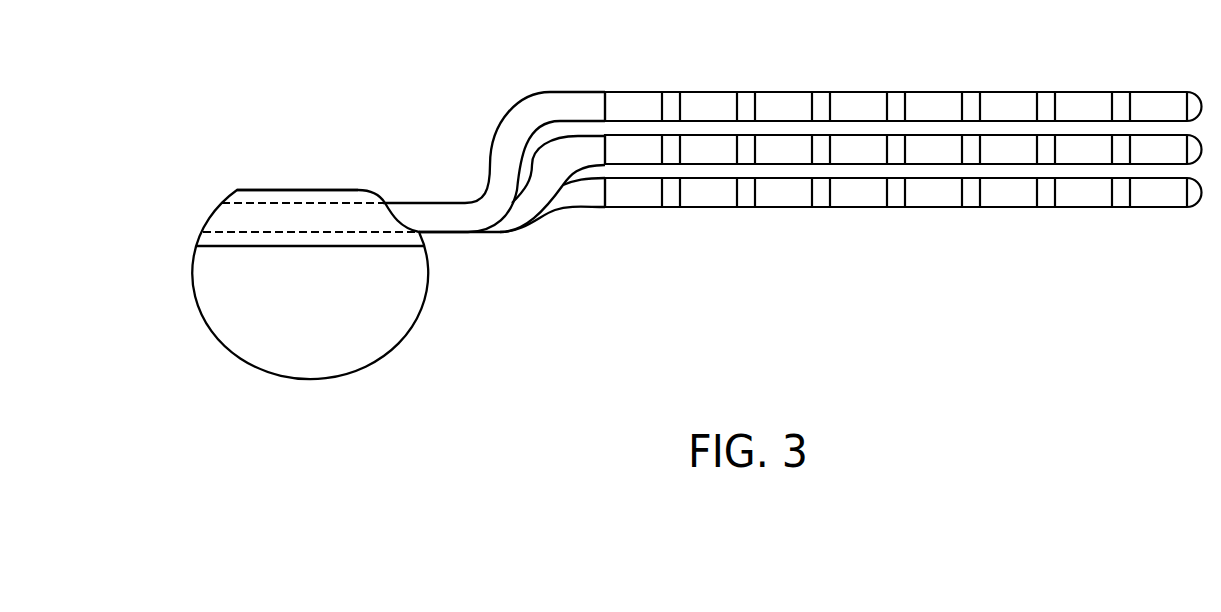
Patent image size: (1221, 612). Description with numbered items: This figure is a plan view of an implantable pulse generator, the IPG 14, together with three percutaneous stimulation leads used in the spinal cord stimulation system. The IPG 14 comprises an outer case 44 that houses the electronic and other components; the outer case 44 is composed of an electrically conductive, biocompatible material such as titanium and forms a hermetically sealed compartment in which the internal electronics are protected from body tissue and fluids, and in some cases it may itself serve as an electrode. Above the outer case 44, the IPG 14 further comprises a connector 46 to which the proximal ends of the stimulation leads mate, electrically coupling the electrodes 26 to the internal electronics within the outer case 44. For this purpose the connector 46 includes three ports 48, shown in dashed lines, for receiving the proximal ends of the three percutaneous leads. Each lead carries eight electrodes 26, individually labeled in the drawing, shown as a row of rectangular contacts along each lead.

The implantable pulse generator (IPG) 14 is at (241, 157).
The electrodes 26 is at (783, 92).
The outer case 44 is at (418, 275).
The connector 46 is at (291, 190).
The ports 48 is at (319, 218).